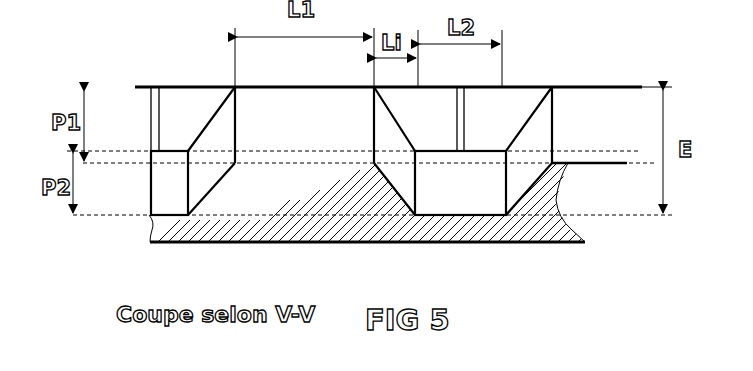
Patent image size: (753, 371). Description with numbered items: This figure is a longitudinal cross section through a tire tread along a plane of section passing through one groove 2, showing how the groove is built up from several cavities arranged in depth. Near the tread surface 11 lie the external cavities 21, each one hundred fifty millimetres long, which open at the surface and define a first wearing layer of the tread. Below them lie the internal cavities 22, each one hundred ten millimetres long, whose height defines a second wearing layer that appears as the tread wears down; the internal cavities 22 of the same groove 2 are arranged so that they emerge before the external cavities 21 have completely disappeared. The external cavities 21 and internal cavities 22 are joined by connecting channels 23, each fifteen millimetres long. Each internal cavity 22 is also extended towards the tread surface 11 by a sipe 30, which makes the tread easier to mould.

The groove 2 is at (583, 107).
The tread surface 11 is at (157, 78).
The external cavity 21 is at (316, 115).
The internal cavity 22 is at (168, 180).
The connecting channel 23 is at (218, 140).
The sipe 30 is at (170, 115).